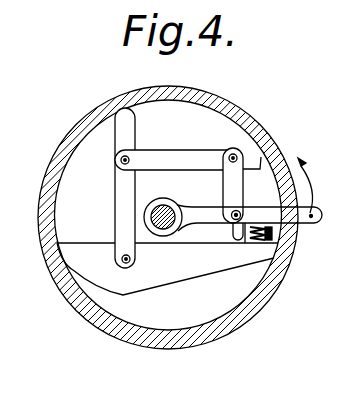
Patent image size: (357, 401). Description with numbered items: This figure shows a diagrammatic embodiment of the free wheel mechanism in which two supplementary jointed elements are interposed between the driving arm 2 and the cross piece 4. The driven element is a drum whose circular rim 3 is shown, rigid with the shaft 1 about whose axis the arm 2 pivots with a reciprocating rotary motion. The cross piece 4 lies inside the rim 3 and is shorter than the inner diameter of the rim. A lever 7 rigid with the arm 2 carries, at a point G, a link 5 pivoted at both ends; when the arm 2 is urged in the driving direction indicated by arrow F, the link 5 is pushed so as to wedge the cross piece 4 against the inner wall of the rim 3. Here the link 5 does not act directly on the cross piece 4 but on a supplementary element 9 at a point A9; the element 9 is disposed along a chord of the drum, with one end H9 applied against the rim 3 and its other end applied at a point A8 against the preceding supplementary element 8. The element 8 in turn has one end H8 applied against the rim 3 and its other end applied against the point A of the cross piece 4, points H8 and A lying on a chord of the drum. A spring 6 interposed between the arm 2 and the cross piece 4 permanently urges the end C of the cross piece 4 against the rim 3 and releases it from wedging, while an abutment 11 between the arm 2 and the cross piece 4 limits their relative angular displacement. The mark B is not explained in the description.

The shaft 1 is at (170, 214).
The arm 2 is at (311, 215).
The rim 3 is at (208, 112).
The cross piece 4 is at (153, 268).
The link 5 is at (229, 183).
The spring 6 is at (268, 237).
The lever 7 is at (205, 219).
The supplementary element 8 is at (118, 201).
The supplementary element 9 is at (192, 160).
The abutment 11 is at (240, 233).
The point A is at (122, 259).
The point A8 is at (121, 160).
The point A9 is at (232, 155).
The point G is at (239, 211).
The end H8 is at (124, 100).
The end H9 is at (267, 158).
The arrow F is at (312, 185).
The axis B is at (58, 258).
The end C is at (276, 255).